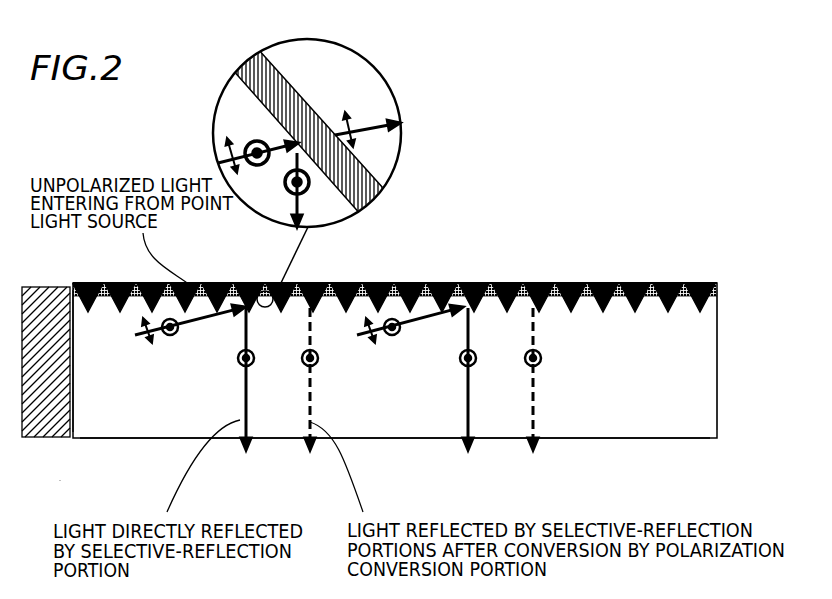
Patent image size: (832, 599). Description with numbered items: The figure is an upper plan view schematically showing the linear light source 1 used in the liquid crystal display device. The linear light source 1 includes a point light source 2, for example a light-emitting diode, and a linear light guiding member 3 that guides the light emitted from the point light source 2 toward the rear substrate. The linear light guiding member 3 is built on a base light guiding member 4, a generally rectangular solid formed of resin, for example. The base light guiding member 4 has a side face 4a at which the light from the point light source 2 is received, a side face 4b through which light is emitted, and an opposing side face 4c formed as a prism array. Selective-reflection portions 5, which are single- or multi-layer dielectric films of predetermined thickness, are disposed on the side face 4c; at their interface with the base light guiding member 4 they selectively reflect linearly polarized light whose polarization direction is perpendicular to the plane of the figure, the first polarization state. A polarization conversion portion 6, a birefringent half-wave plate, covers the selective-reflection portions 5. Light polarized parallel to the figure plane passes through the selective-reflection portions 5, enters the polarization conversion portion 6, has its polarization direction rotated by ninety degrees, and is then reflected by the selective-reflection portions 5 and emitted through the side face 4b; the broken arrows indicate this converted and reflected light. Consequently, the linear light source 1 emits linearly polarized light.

The linear light source 1 is at (594, 151).
The point light source 2 is at (50, 432).
The linear light guiding member 3 is at (720, 282).
The base light guiding member 4 is at (383, 423).
The side face 4a is at (73, 383).
The side face 4b is at (172, 437).
The side face 4c is at (540, 307).
The selective-reflection portions 5 is at (572, 283).
The polarization conversion portion 6 is at (603, 283).